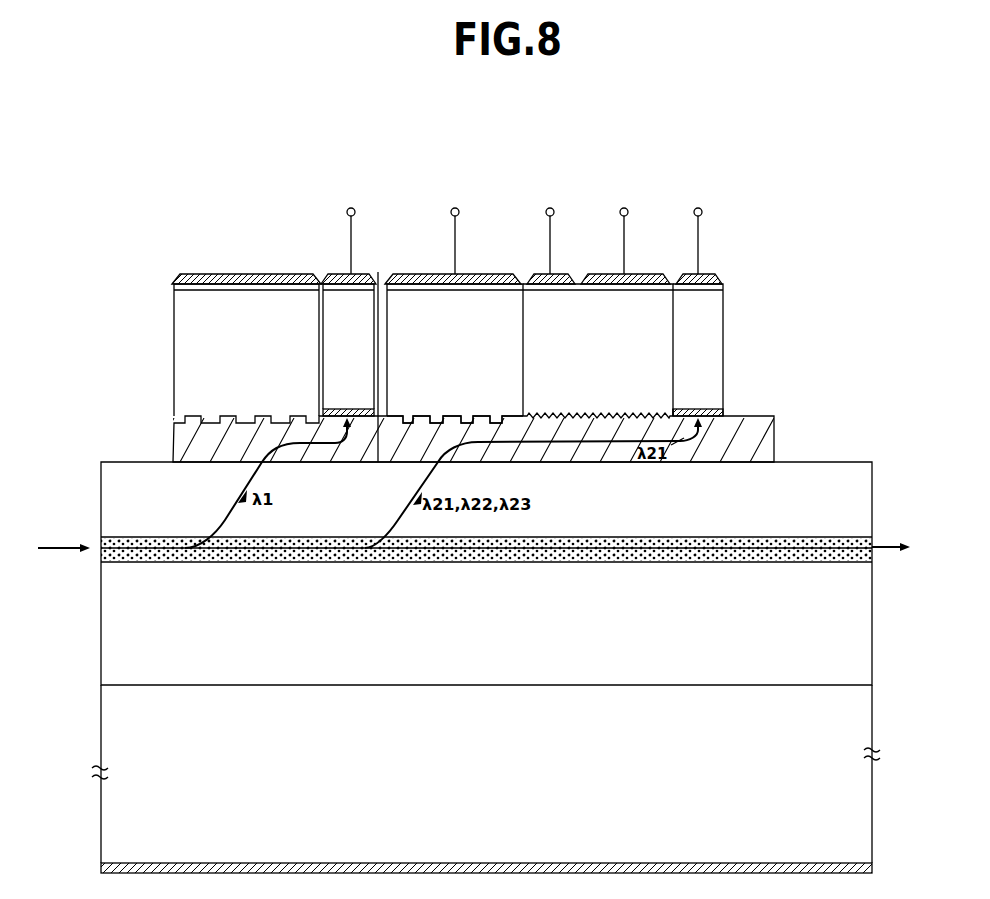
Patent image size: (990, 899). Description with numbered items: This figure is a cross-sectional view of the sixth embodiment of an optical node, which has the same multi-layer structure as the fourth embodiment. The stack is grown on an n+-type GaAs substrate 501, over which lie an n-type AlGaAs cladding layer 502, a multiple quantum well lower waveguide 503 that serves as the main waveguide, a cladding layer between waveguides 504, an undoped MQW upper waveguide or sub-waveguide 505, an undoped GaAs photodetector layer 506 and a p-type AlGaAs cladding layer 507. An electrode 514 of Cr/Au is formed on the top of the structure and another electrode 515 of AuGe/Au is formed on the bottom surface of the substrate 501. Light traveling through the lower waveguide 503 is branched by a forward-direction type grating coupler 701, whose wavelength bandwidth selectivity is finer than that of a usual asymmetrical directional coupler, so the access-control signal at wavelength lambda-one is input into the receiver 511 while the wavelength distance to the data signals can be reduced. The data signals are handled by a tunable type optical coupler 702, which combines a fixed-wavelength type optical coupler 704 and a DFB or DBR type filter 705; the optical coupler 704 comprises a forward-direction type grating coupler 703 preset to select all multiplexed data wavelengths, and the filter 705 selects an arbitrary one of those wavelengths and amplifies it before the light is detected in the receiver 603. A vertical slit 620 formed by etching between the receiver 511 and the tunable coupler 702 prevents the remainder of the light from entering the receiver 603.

The forward-direction type grating coupler 701 is at (313, 206).
The receiver 511 is at (373, 206).
The fixed-wavelength type optical coupler 704 is at (520, 206).
The DFB type or DBR type filter 705 is at (598, 290).
The receiver 603 is at (745, 290).
The tunable type optical coupler 702 is at (528, 264).
The vertical slit 620 is at (378, 272).
The forward-direction type grating coupler 703 is at (437, 414).
The electrode 514 is at (722, 276).
The p-type AlGaAs cladding layer 507 is at (713, 325).
The photodetector layer 506 is at (723, 395).
The upper waveguide or sub-waveguide 505 is at (774, 426).
The cladding layer between waveguides 504 is at (860, 492).
The lower waveguide 503 is at (860, 543).
The n-type AlGaAs cladding layer 502 is at (855, 620).
The n+-type GaAs substrate 501 is at (865, 713).
The electrode 515 is at (870, 865).